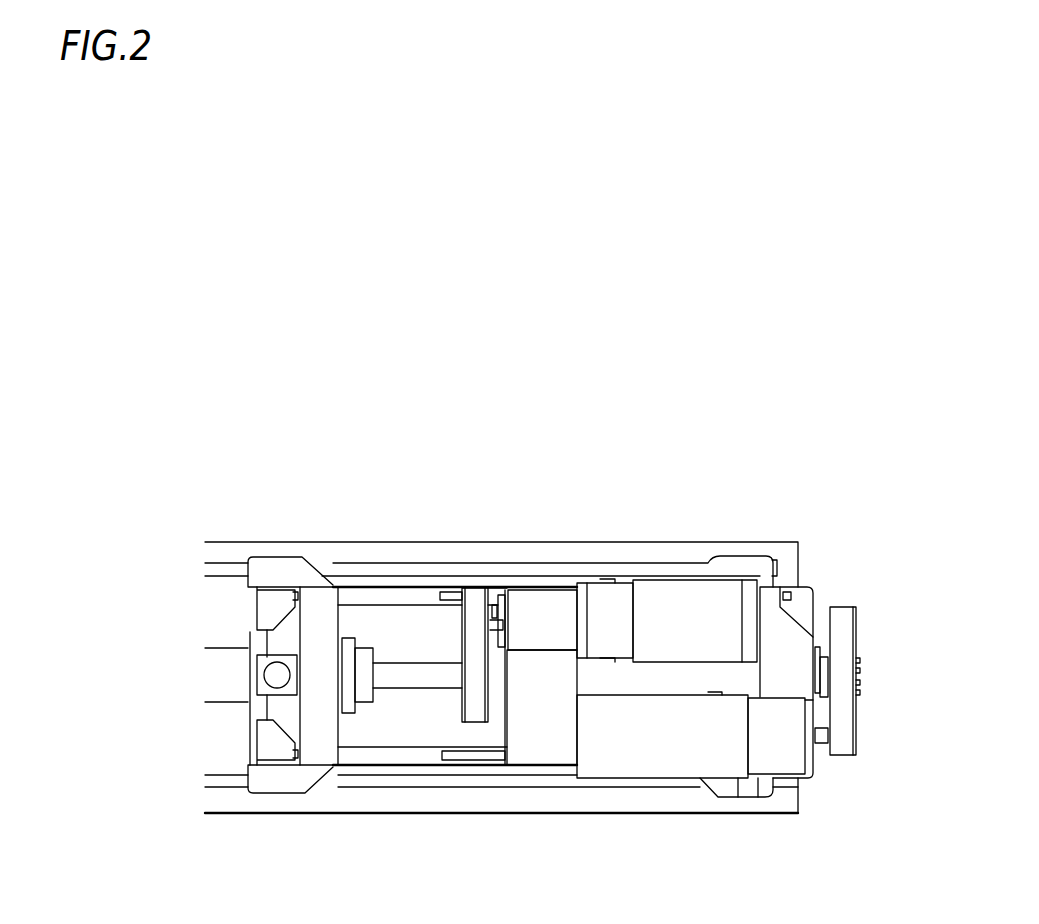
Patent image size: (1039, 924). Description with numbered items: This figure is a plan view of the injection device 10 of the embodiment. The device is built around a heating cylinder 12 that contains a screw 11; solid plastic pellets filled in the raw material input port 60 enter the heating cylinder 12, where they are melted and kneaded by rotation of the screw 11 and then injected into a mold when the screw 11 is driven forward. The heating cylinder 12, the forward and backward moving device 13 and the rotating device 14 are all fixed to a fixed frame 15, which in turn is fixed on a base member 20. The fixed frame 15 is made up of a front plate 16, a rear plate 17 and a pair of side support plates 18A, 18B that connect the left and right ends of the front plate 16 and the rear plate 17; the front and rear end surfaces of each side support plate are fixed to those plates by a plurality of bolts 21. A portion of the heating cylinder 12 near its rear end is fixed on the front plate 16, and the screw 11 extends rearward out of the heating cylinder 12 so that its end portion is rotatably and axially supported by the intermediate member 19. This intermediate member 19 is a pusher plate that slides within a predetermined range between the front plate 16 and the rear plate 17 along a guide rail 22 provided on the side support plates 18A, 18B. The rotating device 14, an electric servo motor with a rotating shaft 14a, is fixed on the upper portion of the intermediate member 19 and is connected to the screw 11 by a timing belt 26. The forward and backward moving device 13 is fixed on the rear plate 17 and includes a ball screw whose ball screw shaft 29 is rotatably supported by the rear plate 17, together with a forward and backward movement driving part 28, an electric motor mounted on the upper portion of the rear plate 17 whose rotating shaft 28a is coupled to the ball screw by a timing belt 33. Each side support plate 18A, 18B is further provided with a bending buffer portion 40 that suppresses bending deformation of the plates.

The injection device 10 is at (776, 280).
The screw 11 is at (398, 678).
The heating cylinder 12 is at (220, 660).
The forward and backward moving device 13 is at (743, 802).
The rotating device 14 is at (597, 597).
The rotating shaft 14a is at (496, 590).
The fixed frame 15 is at (274, 802).
The front plate 16 is at (293, 727).
The rear plate 17 is at (770, 605).
The side support plate 18A is at (357, 760).
The side support plate 18B is at (357, 597).
The intermediate member 19 is at (540, 743).
The base member 20 is at (782, 803).
The bolts 21 is at (295, 595).
The guide rail 22 is at (452, 593).
The timing belt 26 is at (477, 702).
The forward and backward movement driving part 28 is at (670, 757).
The rotating shaft 28a is at (822, 742).
The ball screw shaft 29 is at (818, 677).
The timing belt 33 is at (839, 620).
The bending buffer portion 40 is at (405, 578).
The raw material input port 60 is at (277, 673).